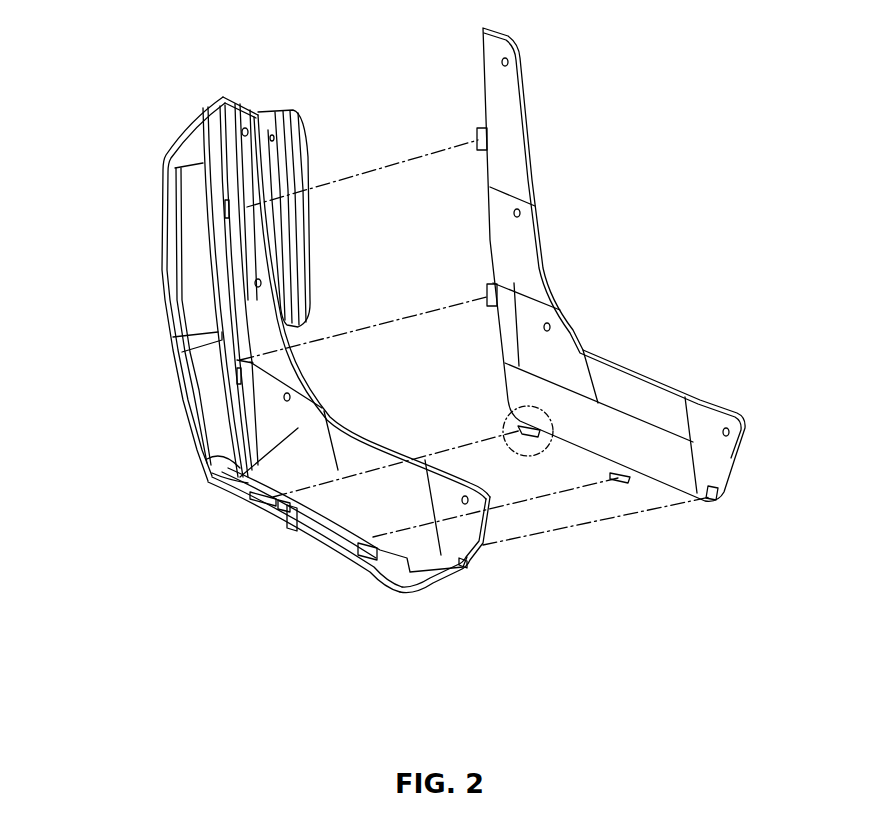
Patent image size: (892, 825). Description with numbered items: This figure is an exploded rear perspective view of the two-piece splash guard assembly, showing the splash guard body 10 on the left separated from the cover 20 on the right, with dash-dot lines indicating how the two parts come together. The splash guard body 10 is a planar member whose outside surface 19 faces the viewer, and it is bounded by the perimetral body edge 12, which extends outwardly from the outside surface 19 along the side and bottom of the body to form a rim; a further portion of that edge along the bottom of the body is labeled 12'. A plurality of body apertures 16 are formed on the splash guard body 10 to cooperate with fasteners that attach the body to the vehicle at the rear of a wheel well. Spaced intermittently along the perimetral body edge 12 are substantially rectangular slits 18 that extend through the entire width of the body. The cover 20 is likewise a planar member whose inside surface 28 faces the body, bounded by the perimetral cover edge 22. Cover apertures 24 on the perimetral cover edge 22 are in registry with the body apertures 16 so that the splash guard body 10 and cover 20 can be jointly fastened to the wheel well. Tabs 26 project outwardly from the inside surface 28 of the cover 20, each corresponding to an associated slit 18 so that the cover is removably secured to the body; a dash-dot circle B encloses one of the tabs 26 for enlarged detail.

The splash guard body 10 is at (118, 152).
The perimetral body edge 12 is at (384, 540).
The seat portion bottom edge 12' is at (318, 564).
The body aperture 16 is at (245, 132).
The slit 18 is at (227, 208).
The outside surface of body 19 is at (221, 488).
The cover 20 is at (597, 115).
The perimetral cover edge 22 is at (737, 460).
The cover aperture 24 is at (505, 62).
The tab 26 is at (477, 140).
The inside surface of cover 28 is at (625, 390).
The detail B is at (550, 455).